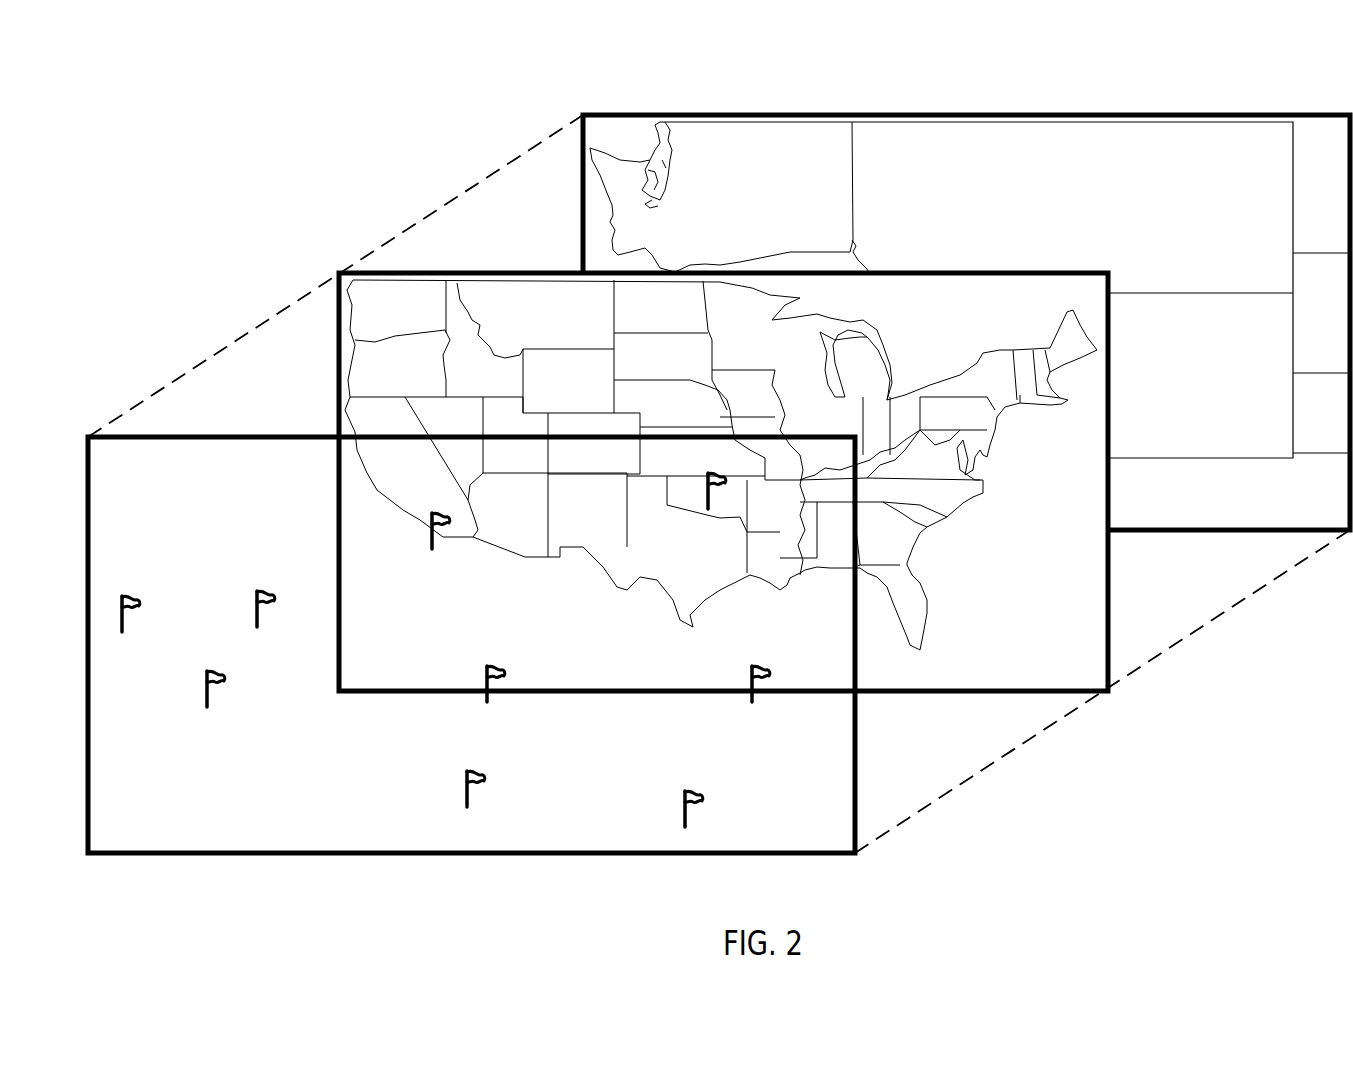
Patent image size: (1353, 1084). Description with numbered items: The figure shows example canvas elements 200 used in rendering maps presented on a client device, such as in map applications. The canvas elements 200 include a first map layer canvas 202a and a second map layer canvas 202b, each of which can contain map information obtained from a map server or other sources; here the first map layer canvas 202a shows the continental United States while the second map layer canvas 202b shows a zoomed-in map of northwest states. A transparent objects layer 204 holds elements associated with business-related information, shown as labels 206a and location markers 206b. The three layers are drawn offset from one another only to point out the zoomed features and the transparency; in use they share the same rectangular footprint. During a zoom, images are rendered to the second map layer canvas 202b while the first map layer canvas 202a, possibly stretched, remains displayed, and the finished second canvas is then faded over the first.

The canvas elements 200 is at (141, 99).
The first map layer canvas 202a is at (368, 270).
The second map layer canvas 202b is at (583, 229).
The transparent objects layer 204 is at (252, 436).
The labels 206a is at (310, 551).
The location markers 206b is at (272, 590).